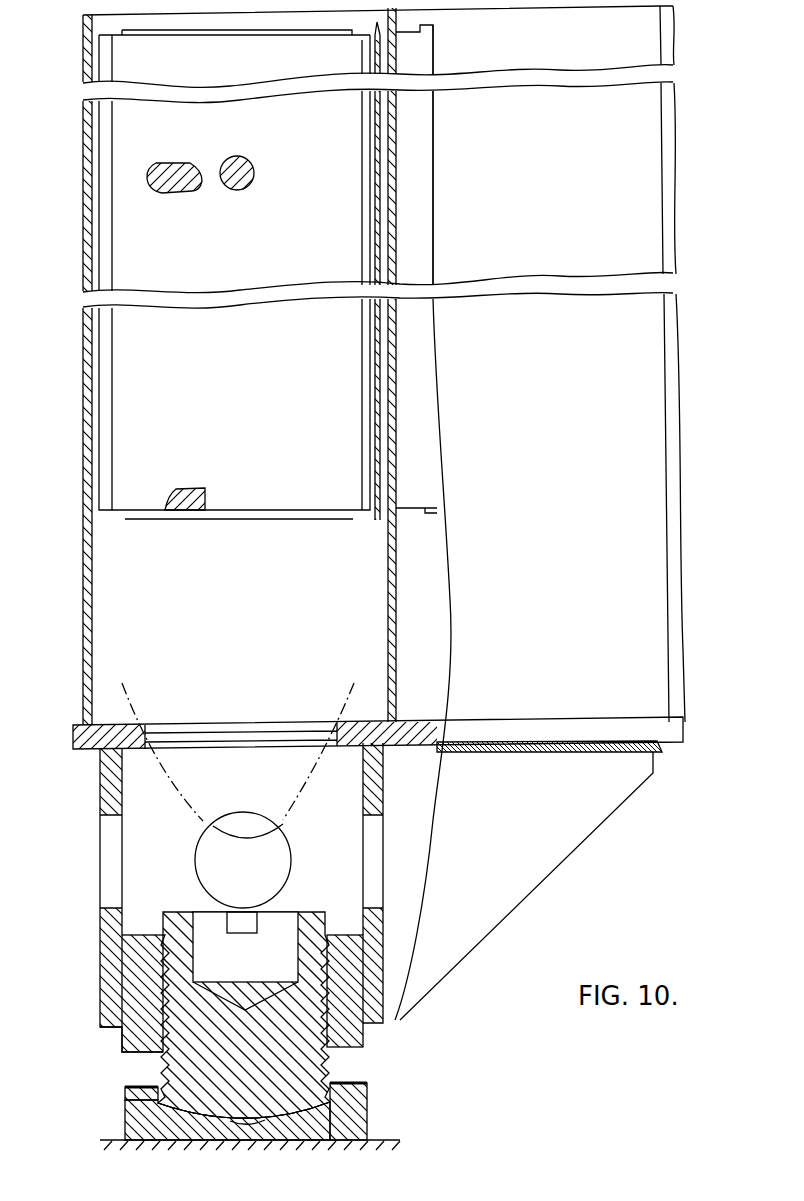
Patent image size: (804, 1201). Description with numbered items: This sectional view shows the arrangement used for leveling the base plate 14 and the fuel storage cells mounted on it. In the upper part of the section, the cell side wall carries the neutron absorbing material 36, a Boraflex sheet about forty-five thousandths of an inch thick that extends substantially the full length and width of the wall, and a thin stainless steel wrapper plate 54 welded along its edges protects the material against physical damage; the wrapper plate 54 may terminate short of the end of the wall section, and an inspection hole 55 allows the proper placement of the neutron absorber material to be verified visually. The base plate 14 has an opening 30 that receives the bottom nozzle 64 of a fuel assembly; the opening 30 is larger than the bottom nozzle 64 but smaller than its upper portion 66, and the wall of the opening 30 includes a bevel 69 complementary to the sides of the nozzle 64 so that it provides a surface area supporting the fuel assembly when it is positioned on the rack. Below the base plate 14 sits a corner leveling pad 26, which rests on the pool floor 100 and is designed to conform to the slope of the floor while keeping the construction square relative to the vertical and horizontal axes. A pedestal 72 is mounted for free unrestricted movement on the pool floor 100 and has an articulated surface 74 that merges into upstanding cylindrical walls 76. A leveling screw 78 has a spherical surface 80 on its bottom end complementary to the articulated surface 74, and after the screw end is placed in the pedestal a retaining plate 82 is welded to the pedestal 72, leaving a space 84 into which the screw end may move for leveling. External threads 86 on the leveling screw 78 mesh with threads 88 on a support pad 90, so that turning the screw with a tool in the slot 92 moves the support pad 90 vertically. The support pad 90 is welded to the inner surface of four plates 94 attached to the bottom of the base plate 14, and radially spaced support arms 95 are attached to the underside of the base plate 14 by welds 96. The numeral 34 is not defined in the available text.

The base plate 14 is at (73, 742).
The corner leveling pad 26 is at (388, 1033).
The opening 30 is at (232, 755).
The housing wall 34 is at (393, 132).
The neutron absorbing material 36 is at (232, 158).
The wrapper plate 54 is at (377, 47).
The inspection hole 55 is at (246, 160).
The bottom nozzle 64 is at (185, 808).
The upper portion 66 is at (350, 717).
The bevel 69 is at (143, 726).
The pedestal 72 is at (125, 1121).
The articulated surface 74 is at (213, 1125).
The upstanding cylindrical walls 76 is at (157, 1100).
The leveling screw 78 is at (163, 920).
The spherical surface 80 is at (270, 1120).
The retaining plate 82 is at (362, 1082).
The space 84 is at (366, 1097).
The external threads 86 is at (163, 963).
The threads 88 is at (163, 990).
The support pad 90 is at (122, 1040).
The slot 92 is at (258, 928).
The plates 94 is at (100, 793).
The support arm 95 is at (538, 827).
The weld 96 is at (660, 750).
The pool floor 100 is at (382, 1140).